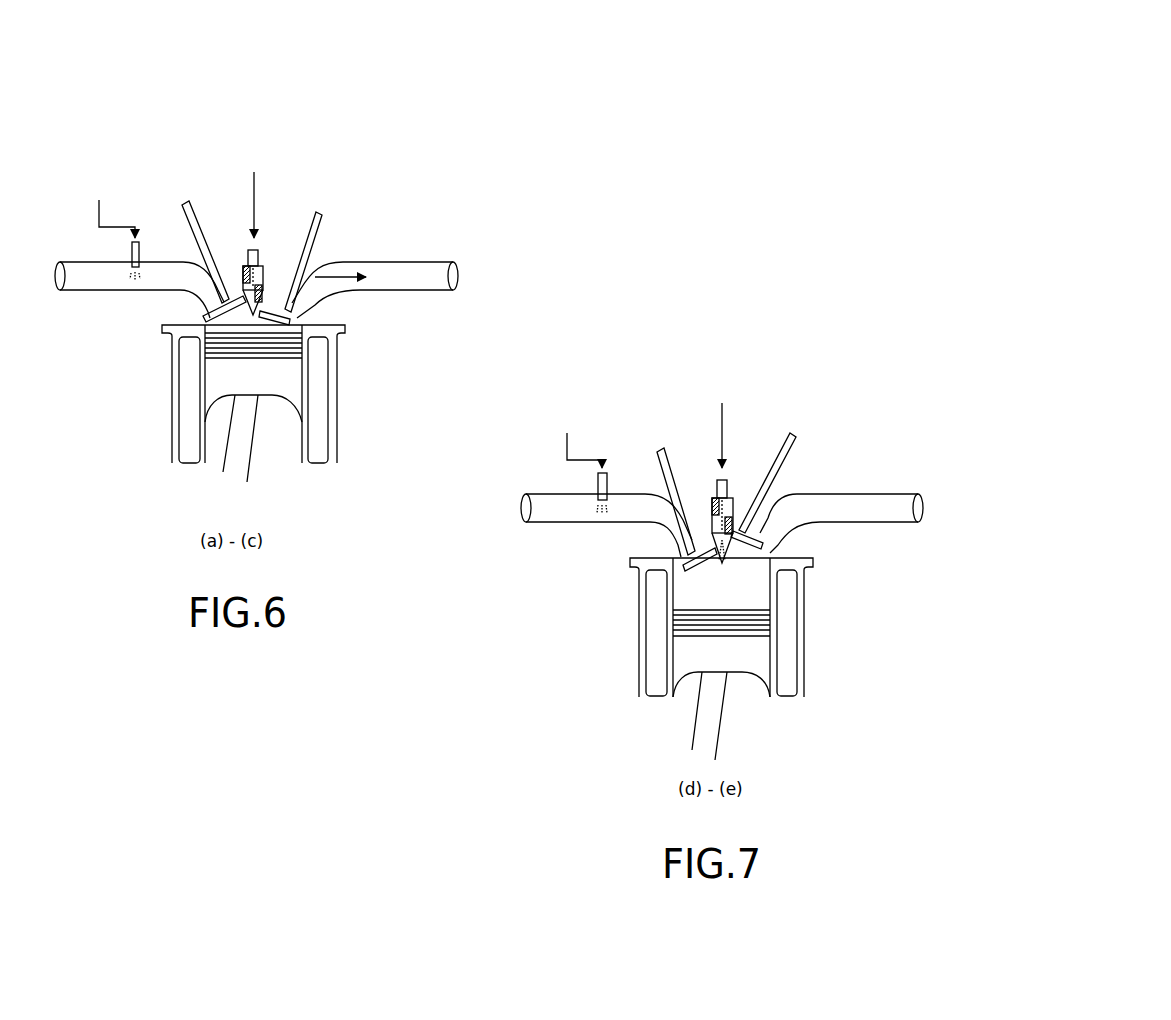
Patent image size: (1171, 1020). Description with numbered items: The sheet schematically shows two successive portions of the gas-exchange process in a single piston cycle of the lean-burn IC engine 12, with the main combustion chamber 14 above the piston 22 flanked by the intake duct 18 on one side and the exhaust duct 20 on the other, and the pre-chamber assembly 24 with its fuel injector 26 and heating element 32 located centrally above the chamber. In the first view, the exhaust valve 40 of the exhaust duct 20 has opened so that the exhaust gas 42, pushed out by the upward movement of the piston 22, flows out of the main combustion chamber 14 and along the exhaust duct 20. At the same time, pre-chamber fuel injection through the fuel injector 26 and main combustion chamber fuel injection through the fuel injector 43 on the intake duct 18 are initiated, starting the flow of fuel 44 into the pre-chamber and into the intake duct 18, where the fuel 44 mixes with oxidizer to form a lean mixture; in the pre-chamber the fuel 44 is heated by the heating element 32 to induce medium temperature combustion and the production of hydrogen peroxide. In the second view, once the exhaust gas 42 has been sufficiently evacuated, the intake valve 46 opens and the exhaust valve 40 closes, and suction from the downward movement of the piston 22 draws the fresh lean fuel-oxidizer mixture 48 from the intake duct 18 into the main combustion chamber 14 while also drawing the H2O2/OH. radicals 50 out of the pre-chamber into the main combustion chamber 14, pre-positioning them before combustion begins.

In FIG. 6, the IC engine 12 is at (425, 170).
In FIG. 7, the IC engine 12 is at (863, 383).
In FIG. 6, the main combustion chamber 14 is at (207, 318).
In FIG. 7, the main combustion chamber 14 is at (758, 587).
In FIG. 6, the intake duct 18 is at (117, 292).
In FIG. 7, the intake duct 18 is at (560, 523).
In FIG. 6, the exhaust duct 20 is at (447, 263).
In FIG. 7, the exhaust duct 20 is at (897, 490).
In FIG. 6, the piston 22 is at (295, 382).
In FIG. 7, the piston 22 is at (758, 657).
In FIG. 6, the pre-chamber assembly 24 is at (220, 268).
In FIG. 7, the pre-chamber assembly 24 is at (700, 515).
In FIG. 6, the fuel injector 26 is at (263, 262).
In FIG. 7, the fuel injector 26 is at (732, 500).
In FIG. 6, the heating element 32 is at (224, 272).
In FIG. 6, the exhaust valve 40 is at (297, 319).
In FIG. 7, the exhaust valve 40 is at (768, 542).
In FIG. 6, the exhaust gas 42 is at (382, 263).
In FIG. 6, the fuel injector 43 is at (139, 260).
In FIG. 6, the fuel 44 is at (140, 273).
In FIG. 7, the fuel 44 is at (601, 505).
In FIG. 7, the intake valve 46 is at (673, 549).
In FIG. 7, the fresh lean fuel-oxidizer mixture 48 is at (642, 512).
In FIG. 7, the H2O2/OH. radicals 50 is at (725, 542).